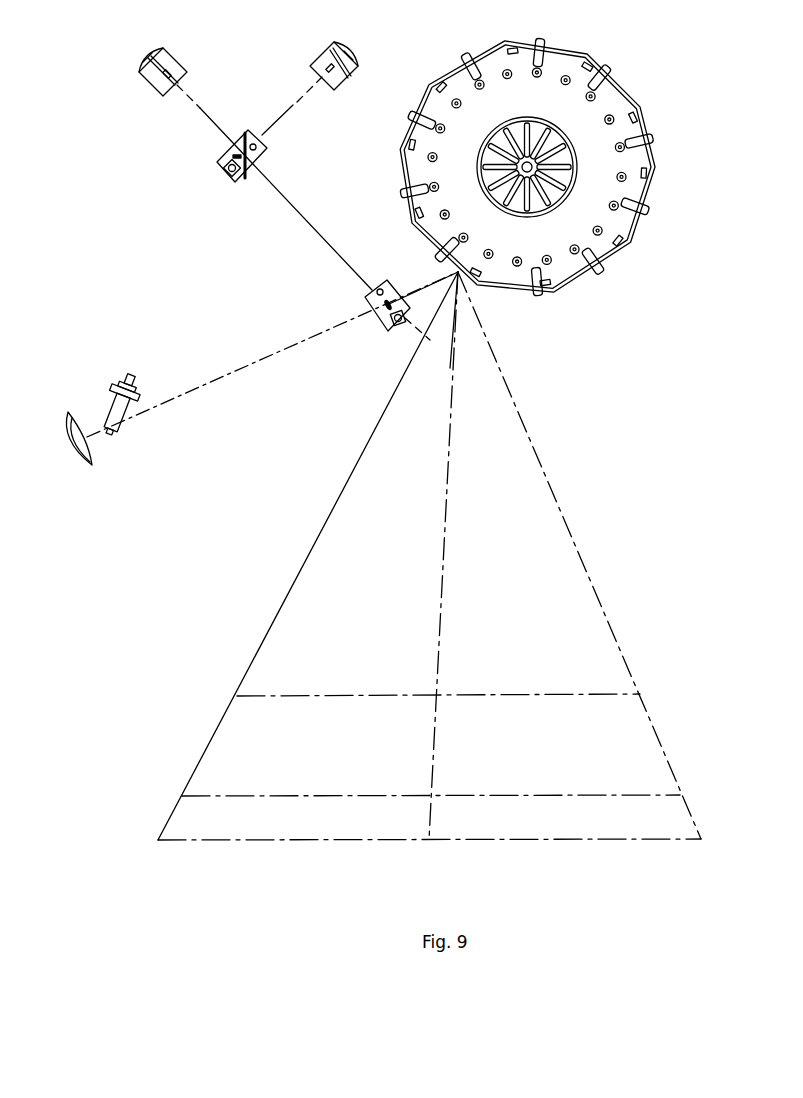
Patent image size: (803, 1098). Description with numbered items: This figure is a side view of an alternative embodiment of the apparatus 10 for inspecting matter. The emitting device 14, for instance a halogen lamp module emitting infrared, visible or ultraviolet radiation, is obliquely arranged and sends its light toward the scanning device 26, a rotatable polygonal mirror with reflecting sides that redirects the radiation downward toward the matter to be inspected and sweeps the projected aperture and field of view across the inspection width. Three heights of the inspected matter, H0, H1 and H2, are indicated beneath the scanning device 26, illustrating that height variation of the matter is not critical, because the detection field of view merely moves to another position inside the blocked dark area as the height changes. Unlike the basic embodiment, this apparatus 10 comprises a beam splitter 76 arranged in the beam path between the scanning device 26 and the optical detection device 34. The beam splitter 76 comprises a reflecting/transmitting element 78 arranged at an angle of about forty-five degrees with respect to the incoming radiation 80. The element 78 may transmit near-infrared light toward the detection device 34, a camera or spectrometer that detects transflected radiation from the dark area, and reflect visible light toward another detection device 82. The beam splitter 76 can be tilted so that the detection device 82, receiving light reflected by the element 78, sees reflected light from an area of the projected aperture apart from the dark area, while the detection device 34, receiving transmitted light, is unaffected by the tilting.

The apparatus for inspecting matter 10 is at (240, 321).
The emitting device 14 is at (145, 417).
The scanning device 26 is at (547, 167).
The optical detection device 34 is at (124, 72).
The beam splitter 76 is at (196, 180).
The reflecting/transmitting element 78 is at (248, 138).
The incoming radiation 80 is at (274, 183).
The detection device 82 is at (298, 59).
The height H0 is at (438, 582).
The height H1 is at (451, 769).
The height H2 is at (479, 667).